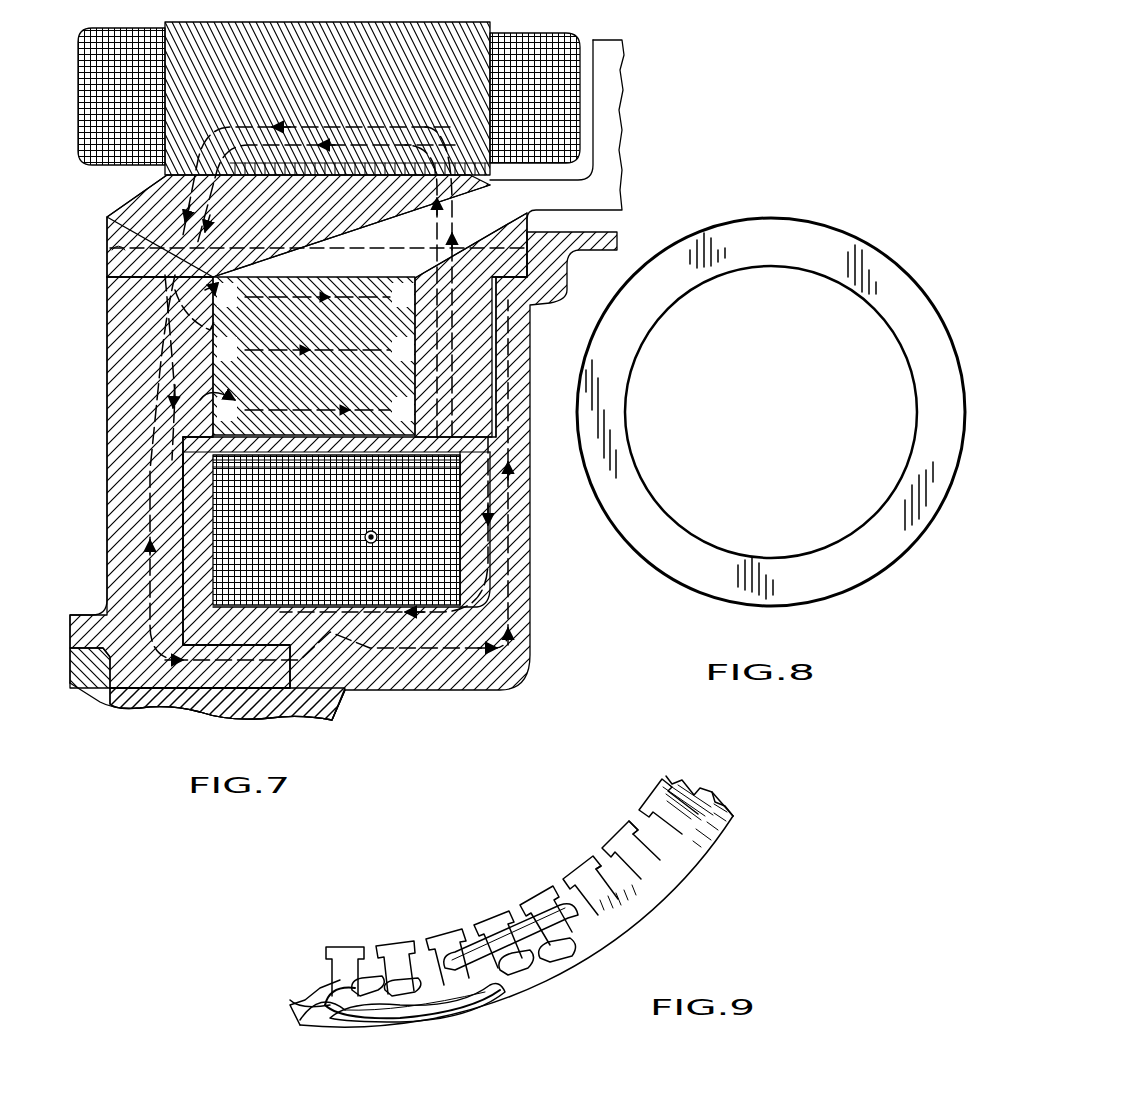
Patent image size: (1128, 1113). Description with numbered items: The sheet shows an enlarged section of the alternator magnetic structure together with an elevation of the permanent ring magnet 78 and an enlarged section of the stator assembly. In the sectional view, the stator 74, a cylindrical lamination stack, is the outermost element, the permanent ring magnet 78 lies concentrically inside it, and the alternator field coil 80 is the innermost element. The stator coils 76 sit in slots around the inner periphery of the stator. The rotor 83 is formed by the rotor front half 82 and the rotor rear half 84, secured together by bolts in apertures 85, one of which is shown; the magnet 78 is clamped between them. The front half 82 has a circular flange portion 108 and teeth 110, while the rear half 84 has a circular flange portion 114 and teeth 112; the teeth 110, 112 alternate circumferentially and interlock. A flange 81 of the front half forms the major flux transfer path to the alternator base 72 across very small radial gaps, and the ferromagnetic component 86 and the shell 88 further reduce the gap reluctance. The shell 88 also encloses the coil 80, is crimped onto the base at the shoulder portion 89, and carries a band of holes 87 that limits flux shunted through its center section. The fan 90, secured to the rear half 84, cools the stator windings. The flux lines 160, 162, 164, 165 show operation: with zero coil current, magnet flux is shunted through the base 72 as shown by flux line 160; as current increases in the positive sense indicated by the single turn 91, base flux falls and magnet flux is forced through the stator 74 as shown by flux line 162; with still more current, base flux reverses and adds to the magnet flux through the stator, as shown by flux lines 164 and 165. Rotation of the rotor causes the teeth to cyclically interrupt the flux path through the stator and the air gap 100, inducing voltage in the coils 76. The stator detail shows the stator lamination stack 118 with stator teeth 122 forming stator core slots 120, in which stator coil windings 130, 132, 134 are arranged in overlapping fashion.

In FIG. 7, the alternator base 72 is at (384, 681).
In FIG. 7, the stator 74 is at (322, 61).
In FIG. 9, the stator 74 is at (700, 785).
In FIG. 7, the stator coils 76 is at (548, 88).
In FIG. 9, the stator coils 76 is at (420, 925).
In FIG. 7, the permanent ring magnet 78 is at (322, 366).
In FIG. 8, the permanent ring magnet 78 is at (722, 225).
In FIG. 7, the alternator field coil 80 is at (319, 533).
In FIG. 7, the flange 81 is at (225, 685).
In FIG. 7, the rotor front half 82 is at (107, 350).
In FIG. 7, the rotor 83 is at (103, 226).
In FIG. 7, the rotor rear half 84 is at (490, 330).
In FIG. 7, the apertures 85 is at (112, 252).
In FIG. 7, the ferromagnetic component 86 is at (213, 568).
In FIG. 7, the band of holes 87 is at (336, 487).
In FIG. 7, the shell 88 is at (279, 487).
In FIG. 7, the shoulder portion 89 is at (452, 487).
In FIG. 7, the fan 90 is at (624, 82).
In FIG. 7, the single turn 91 is at (378, 535).
In FIG. 7, the air gap 100 is at (183, 556).
In FIG. 7, the circular flange portion 108 is at (202, 366).
In FIG. 7, the teeth 110 is at (338, 209).
In FIG. 7, the teeth 112 is at (422, 245).
In FIG. 7, the circular flange portion 114 is at (462, 384).
In FIG. 9, the stator lamination stack 118 is at (753, 797).
In FIG. 9, the stator core slots 120 is at (648, 830).
In FIG. 9, the stator teeth 122 is at (615, 845).
In FIG. 9, the stator coil winding 130 is at (500, 925).
In FIG. 9, the stator coil winding 132 is at (560, 958).
In FIG. 9, the stator coil winding 134 is at (440, 1010).
In FIG. 7, the flux line 160 is at (480, 555).
In FIG. 7, the flux line 162 is at (355, 150).
In FIG. 7, the flux line 164 is at (150, 405).
In FIG. 7, the flux line 165 is at (158, 300).